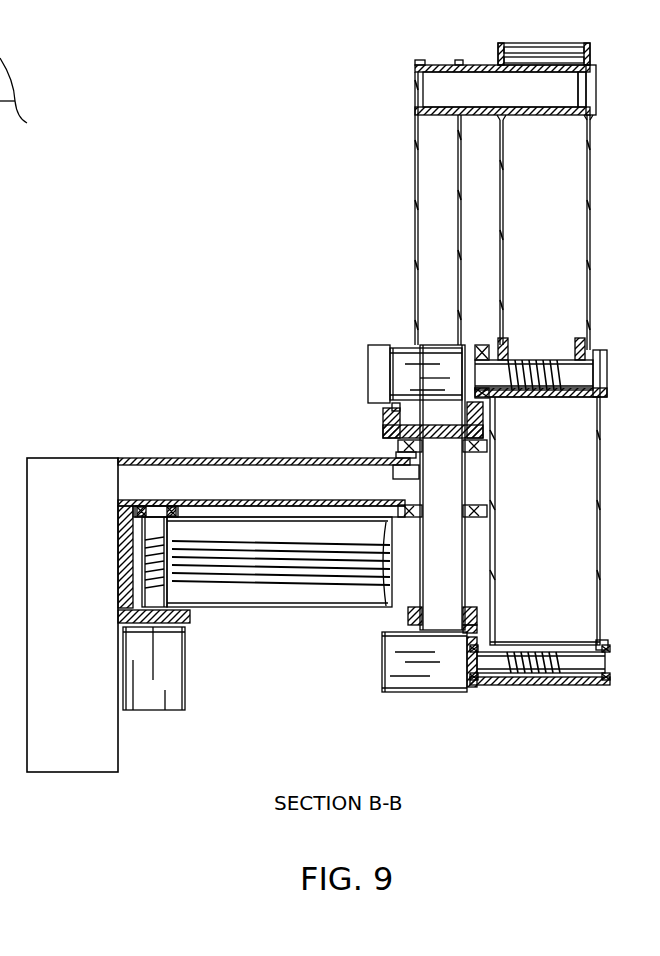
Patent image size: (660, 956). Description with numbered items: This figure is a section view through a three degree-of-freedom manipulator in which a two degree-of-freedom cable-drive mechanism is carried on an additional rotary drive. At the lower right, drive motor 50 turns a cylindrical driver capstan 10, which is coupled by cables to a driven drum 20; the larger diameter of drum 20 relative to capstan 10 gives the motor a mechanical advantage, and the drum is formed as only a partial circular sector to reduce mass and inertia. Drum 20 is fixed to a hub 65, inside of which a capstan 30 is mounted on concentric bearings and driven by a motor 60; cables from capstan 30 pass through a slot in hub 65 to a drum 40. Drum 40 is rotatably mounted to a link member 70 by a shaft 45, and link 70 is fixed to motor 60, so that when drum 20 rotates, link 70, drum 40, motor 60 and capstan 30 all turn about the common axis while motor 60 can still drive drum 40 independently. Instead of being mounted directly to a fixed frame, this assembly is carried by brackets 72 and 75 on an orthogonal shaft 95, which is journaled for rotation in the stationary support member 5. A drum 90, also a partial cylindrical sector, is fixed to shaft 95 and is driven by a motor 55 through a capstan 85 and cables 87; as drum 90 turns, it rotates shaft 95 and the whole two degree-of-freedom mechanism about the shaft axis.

The stationary stand member 5 is at (156, 458).
The driver capstan 10 is at (608, 668).
The driven drum 20 is at (600, 497).
The capstan 30 is at (583, 355).
The drum 40 is at (590, 187).
The shaft 45 is at (480, 65).
The drive motor 50 is at (382, 668).
The motor 55 is at (160, 713).
The motor 60 is at (368, 372).
The hub 65 is at (562, 397).
The link member 70 is at (415, 253).
The bracket 72 is at (383, 428).
The bracket 75 is at (408, 622).
The capstan 85 is at (152, 527).
The cables 87 is at (175, 565).
The drum 90 is at (275, 612).
The orthogonal shaft 95 is at (388, 472).